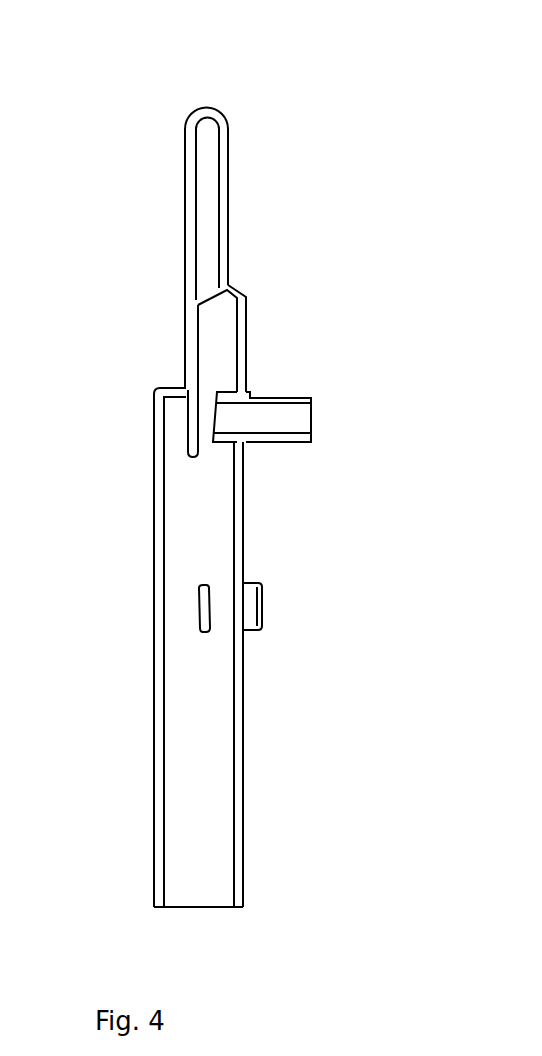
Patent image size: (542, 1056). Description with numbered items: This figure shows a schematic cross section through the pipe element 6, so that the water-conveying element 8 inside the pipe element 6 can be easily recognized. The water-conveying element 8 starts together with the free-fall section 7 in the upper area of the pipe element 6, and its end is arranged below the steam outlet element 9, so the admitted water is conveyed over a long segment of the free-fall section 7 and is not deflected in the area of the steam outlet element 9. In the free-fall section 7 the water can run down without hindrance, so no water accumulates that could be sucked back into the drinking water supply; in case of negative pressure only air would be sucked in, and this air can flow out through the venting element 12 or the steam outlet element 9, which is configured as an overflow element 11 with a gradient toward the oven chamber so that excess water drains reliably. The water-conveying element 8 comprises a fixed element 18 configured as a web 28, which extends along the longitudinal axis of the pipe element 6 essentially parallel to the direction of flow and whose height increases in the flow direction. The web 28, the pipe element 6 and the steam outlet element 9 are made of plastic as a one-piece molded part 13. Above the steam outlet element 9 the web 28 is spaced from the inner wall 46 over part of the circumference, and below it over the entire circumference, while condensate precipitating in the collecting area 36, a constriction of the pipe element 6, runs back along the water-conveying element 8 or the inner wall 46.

The pipe element 6 is at (232, 128).
The free-fall section 7 is at (208, 212).
The water-conveying element 8 is at (183, 125).
The steam outlet element 9 is at (314, 443).
The overflow element 11 is at (302, 443).
The venting element 12 is at (285, 424).
The molded part 13 is at (154, 595).
The fixed element 18 is at (185, 330).
The web 28 is at (187, 388).
The collecting area 36 is at (244, 305).
The inner wall 46 is at (163, 499).